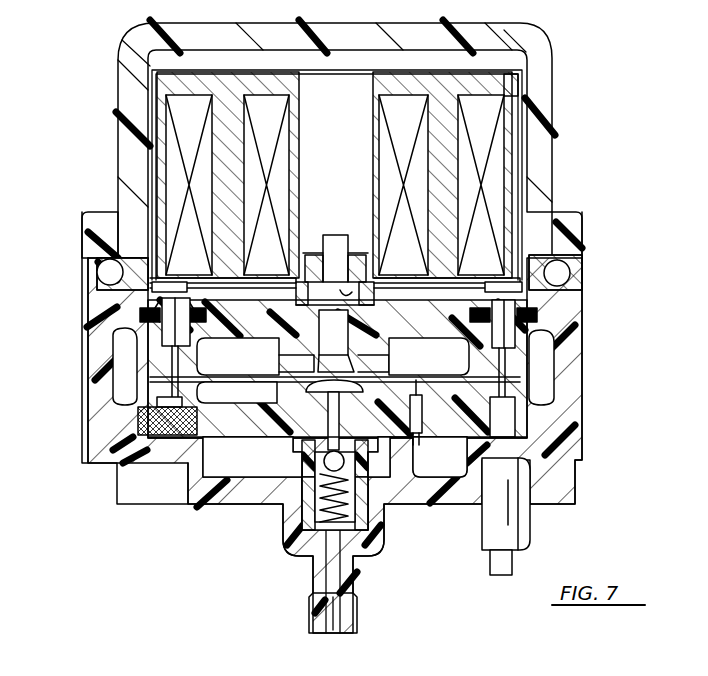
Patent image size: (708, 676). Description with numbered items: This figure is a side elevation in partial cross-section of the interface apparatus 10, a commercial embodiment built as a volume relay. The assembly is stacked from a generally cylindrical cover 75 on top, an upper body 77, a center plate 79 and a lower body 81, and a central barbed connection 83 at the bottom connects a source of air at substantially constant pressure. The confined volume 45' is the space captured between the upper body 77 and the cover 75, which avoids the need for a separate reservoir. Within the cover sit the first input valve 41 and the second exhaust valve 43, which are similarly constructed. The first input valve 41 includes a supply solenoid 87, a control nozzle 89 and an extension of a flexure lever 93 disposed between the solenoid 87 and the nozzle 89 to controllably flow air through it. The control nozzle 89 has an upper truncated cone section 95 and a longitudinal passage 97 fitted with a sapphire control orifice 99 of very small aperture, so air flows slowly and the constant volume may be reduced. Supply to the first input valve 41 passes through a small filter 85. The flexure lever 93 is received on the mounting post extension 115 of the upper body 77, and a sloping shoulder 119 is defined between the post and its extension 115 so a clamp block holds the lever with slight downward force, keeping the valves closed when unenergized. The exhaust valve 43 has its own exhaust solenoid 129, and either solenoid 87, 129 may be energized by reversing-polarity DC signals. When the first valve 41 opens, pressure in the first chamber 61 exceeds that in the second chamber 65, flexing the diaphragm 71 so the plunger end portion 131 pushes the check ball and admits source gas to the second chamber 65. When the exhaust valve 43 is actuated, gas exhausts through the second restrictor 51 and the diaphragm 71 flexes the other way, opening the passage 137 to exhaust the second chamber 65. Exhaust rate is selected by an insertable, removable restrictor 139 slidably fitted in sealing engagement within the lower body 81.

The apparatus 10 is at (175, 543).
The first input valve 41 is at (80, 256).
The second exhaust valve 43 is at (590, 268).
The confined volume 45' is at (336, 152).
The second restrictor 51 is at (522, 320).
The first chamber 61 is at (268, 365).
The second chamber 65 is at (242, 401).
The diaphragm 71 is at (458, 372).
The cover 75 is at (118, 72).
The upper body 77 is at (95, 290).
The center plate 79 is at (95, 395).
The lower body 81 is at (95, 448).
The central barbed connection 83 is at (313, 580).
The small filter 85 is at (163, 423).
The supply solenoid 87 is at (299, 84).
The control nozzle 89 is at (190, 343).
The flexure lever 93 is at (298, 218).
The upper truncated cone section 95 is at (187, 290).
The longitudinal passage 97 is at (155, 340).
The control orifice 99 is at (155, 328).
The mounting post extension 115 is at (343, 232).
The shoulder 119 is at (346, 288).
The exhaust solenoid 129 is at (507, 88).
The plunger end portion 131 is at (275, 433).
The passage 137 is at (415, 435).
The insertable removable restrictor 139 is at (493, 527).